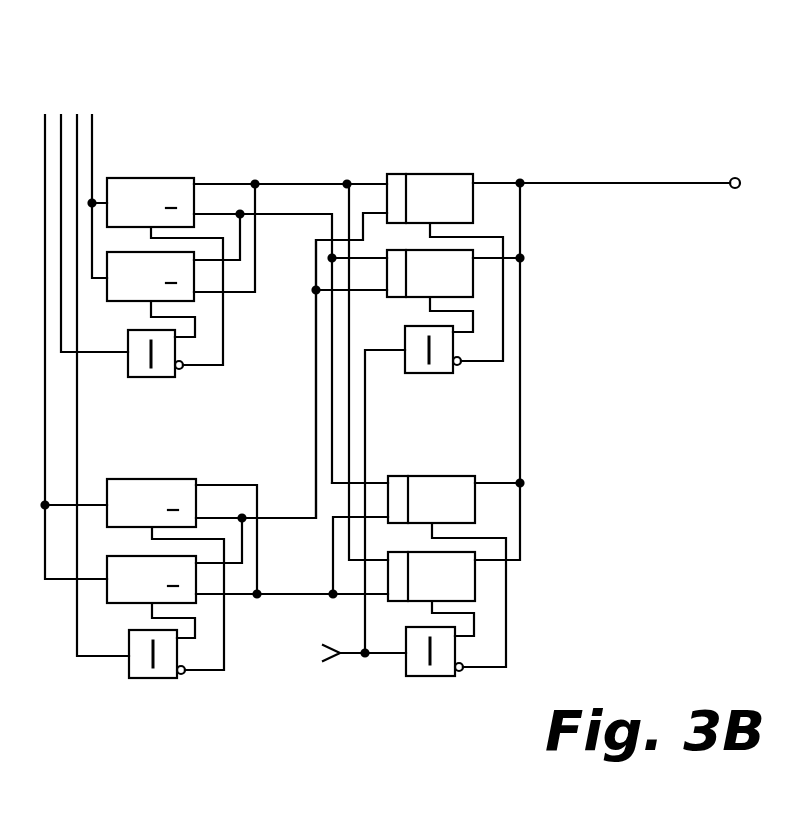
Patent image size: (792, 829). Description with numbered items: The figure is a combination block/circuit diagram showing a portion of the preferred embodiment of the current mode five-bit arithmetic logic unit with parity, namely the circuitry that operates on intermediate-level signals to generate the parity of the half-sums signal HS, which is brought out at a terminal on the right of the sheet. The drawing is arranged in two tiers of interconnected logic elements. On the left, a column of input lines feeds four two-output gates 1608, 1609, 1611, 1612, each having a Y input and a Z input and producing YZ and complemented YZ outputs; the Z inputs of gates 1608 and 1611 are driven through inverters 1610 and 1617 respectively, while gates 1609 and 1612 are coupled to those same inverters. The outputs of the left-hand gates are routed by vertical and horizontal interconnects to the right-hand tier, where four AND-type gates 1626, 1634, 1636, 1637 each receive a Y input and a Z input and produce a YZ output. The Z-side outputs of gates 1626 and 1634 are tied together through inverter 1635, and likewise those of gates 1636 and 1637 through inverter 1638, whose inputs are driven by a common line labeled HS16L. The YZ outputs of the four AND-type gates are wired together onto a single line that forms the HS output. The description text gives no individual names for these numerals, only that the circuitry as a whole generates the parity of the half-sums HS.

The logic gate 1608 is at (156, 178).
The logic gate 1609 is at (156, 253).
The inverter 1610 is at (130, 337).
The logic gate 1611 is at (152, 479).
The logic gate 1612 is at (152, 556).
The inverter 1617 is at (131, 640).
The AND gate 1626 is at (431, 174).
The AND gate 1634 is at (430, 250).
The inverter 1635 is at (407, 336).
The AND gate 1636 is at (432, 476).
The AND gate 1637 is at (431, 552).
The inverter 1638 is at (408, 637).